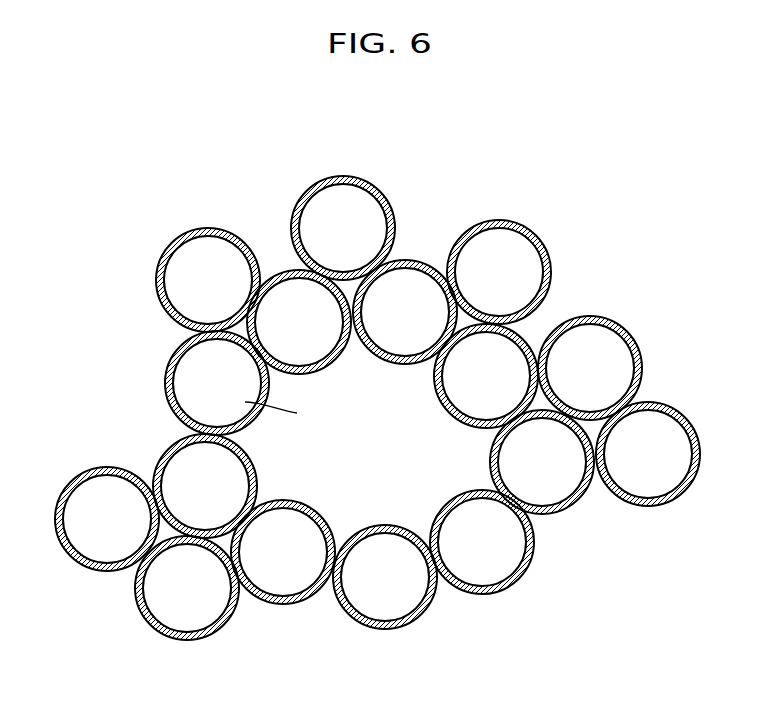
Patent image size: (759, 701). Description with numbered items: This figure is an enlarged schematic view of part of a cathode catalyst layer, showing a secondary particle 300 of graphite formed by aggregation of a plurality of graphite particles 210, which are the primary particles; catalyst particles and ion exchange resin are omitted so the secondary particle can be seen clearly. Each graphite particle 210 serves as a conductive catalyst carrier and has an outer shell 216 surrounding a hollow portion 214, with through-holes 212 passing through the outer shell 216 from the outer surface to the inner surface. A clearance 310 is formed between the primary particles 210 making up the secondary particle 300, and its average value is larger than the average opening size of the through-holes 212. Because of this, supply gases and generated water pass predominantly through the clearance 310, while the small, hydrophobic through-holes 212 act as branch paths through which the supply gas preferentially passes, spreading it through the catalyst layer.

The secondary particle 300 is at (565, 176).
The graphite particle 210 is at (192, 233).
The through-hole 212 is at (157, 295).
The hollow portion 214 is at (195, 267).
The outer shell 216 is at (158, 260).
The clearance 310 is at (245, 402).